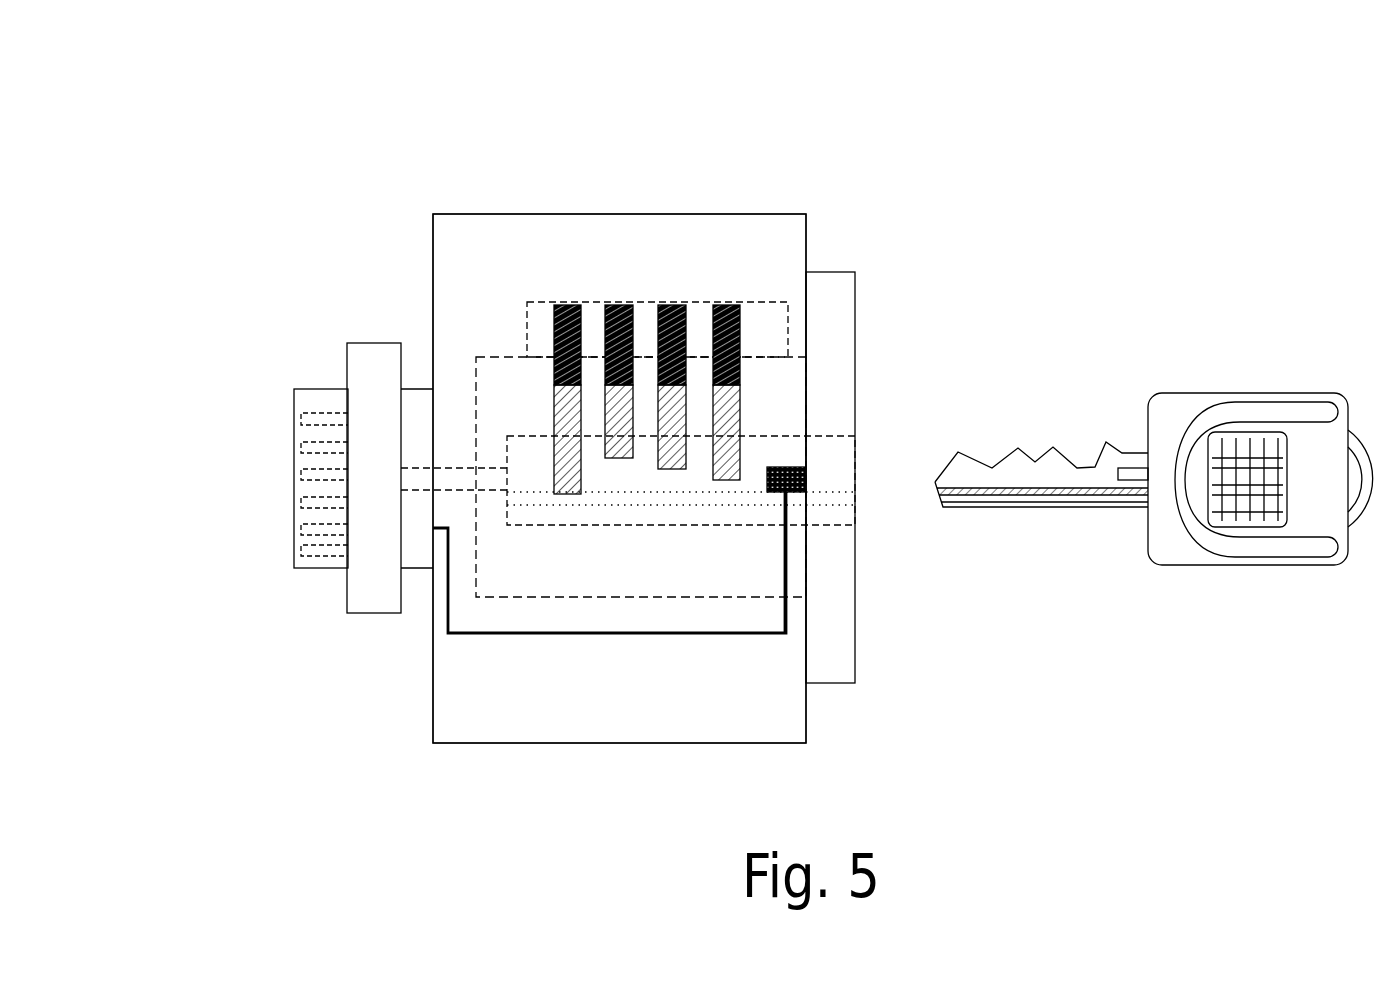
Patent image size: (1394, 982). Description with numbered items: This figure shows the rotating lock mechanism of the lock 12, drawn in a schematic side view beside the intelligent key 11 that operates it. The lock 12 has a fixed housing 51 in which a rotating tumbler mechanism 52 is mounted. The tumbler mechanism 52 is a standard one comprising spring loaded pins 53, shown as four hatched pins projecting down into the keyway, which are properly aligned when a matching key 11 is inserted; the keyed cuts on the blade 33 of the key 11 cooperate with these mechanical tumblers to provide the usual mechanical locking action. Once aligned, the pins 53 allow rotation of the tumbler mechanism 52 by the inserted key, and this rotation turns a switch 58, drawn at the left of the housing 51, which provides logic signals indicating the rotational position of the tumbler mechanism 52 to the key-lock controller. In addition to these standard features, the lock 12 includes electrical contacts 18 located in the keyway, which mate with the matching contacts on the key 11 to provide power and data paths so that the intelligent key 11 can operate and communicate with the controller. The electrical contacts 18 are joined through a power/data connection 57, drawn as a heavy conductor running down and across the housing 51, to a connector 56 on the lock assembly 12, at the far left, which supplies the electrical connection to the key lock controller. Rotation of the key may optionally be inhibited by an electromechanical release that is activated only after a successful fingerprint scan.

The intelligent key 11 is at (1309, 353).
The lock 12 is at (872, 170).
The electrical contacts 18 is at (800, 491).
The blade 33 is at (1022, 466).
The fixed housing 51 is at (688, 239).
The rotating tumbler mechanism 52 is at (842, 410).
The spring loaded pins 53 is at (673, 298).
The connector 56 is at (319, 439).
The power/data connection 57 is at (557, 633).
The switch 58 is at (375, 373).